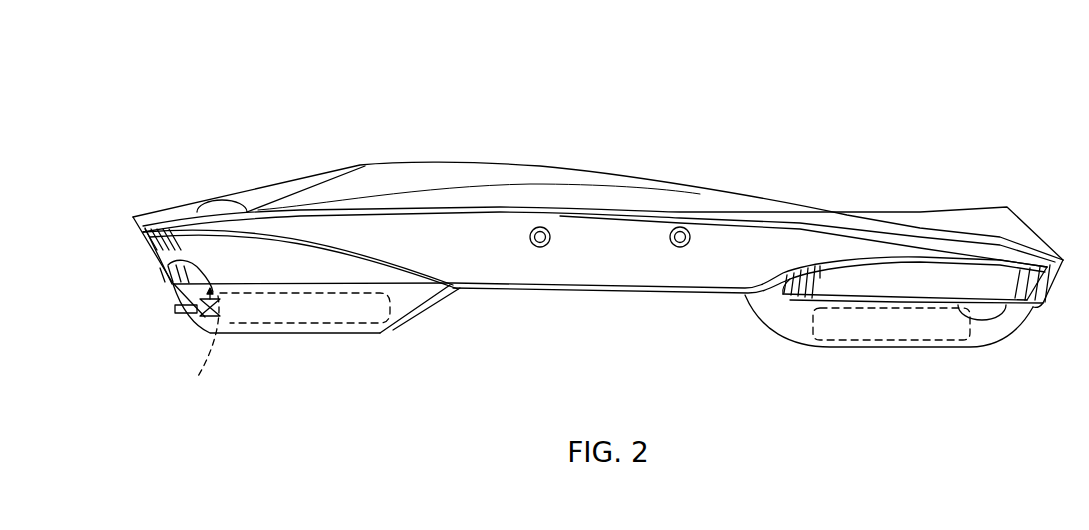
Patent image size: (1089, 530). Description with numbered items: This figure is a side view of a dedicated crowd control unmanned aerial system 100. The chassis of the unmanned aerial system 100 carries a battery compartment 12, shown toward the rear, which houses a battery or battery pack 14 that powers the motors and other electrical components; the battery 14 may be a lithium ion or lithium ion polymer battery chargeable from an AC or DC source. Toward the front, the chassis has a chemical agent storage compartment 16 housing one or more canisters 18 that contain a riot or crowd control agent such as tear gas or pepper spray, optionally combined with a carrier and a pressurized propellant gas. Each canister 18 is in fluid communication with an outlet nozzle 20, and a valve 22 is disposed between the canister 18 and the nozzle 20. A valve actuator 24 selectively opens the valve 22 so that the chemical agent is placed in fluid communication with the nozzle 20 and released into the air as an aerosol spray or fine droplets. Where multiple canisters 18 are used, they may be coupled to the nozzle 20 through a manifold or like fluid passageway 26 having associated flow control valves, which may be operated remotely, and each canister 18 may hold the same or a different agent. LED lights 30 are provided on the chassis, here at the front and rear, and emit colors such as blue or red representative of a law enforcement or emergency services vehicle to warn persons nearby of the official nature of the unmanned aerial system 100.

The unmanned aerial system 100 is at (284, 66).
The battery compartment 12 is at (985, 347).
The battery 14 is at (805, 334).
The chemical agent storage compartment 16 is at (333, 334).
The canister 18 is at (410, 331).
The outlet nozzle 20 is at (177, 310).
The valve 22 is at (205, 316).
The valve actuator 24 is at (180, 265).
The fluid passageway 26 is at (197, 377).
The LED lights 30 is at (202, 203).